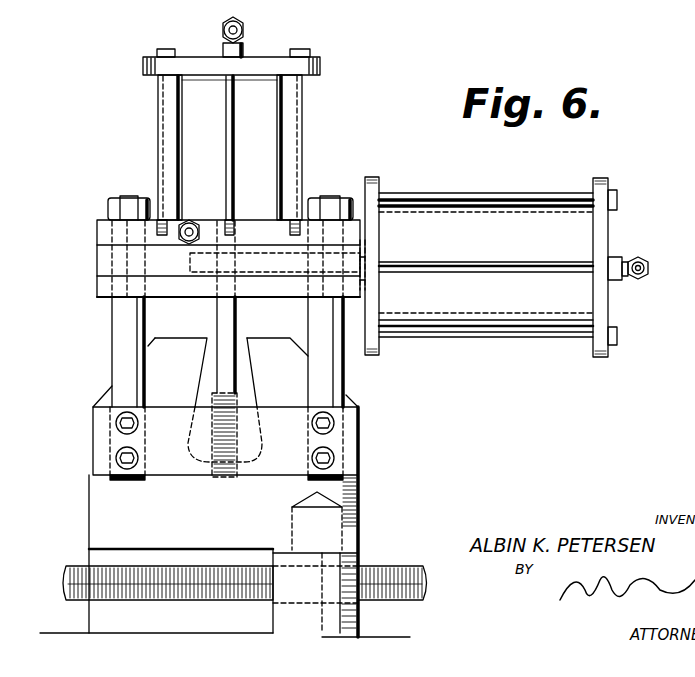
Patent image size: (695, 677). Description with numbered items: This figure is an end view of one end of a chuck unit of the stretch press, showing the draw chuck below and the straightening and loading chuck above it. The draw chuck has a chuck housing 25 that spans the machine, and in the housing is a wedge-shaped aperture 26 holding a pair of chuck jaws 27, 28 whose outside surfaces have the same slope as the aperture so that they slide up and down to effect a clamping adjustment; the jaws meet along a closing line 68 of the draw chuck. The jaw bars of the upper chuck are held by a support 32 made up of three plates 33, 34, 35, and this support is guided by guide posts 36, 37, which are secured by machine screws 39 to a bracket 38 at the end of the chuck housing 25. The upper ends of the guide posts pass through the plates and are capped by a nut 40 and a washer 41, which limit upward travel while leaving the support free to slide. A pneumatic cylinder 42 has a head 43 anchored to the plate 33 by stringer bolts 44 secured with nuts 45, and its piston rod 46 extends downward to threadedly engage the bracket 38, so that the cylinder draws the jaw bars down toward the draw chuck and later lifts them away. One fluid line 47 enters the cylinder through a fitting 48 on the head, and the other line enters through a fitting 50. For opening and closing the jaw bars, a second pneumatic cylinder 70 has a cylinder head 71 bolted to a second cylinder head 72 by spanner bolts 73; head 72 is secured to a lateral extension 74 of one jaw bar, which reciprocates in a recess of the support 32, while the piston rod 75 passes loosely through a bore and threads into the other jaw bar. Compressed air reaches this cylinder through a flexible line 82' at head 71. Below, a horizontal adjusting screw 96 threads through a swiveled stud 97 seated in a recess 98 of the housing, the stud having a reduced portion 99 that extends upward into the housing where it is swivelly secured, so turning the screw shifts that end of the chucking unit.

The chuck housing 25 is at (358, 510).
The wedge-shaped aperture 26 is at (247, 362).
The chuck jaw 27 is at (247, 394).
The chuck jaw 28 is at (210, 387).
The support 32 is at (97, 219).
The plate 33 is at (100, 233).
The plate 34 is at (100, 262).
The plate 35 is at (100, 287).
The guide post 36 is at (112, 318).
The guide post 37 is at (308, 317).
The bracket 38 is at (97, 459).
The machine screws 39 is at (118, 455).
The nut 40 is at (314, 196).
The washer 41 is at (330, 206).
The pneumatic cylinder 42 is at (182, 144).
The cylinder head 43 is at (143, 66).
The stringer bolts 44 is at (228, 113).
The nuts 45 is at (160, 48).
The piston rod 46 is at (217, 314).
The fluid line 47 is at (248, 29).
The fitting 48 is at (222, 30).
The fitting 50 is at (190, 220).
The closing line 68 is at (225, 382).
The pneumatic cylinder 70 is at (522, 216).
The cylinder head 71 is at (606, 222).
The cylinder head 72 is at (372, 178).
The spanner bolts 73 is at (522, 265).
The lateral extension 74 is at (365, 256).
The piston rod 75 is at (272, 253).
The flexible line 82' is at (649, 268).
The horizontal adjusting screw 96 is at (392, 604).
The swiveled stud 97 is at (358, 558).
The recess 98 is at (204, 553).
The reduced portion 99 is at (342, 532).